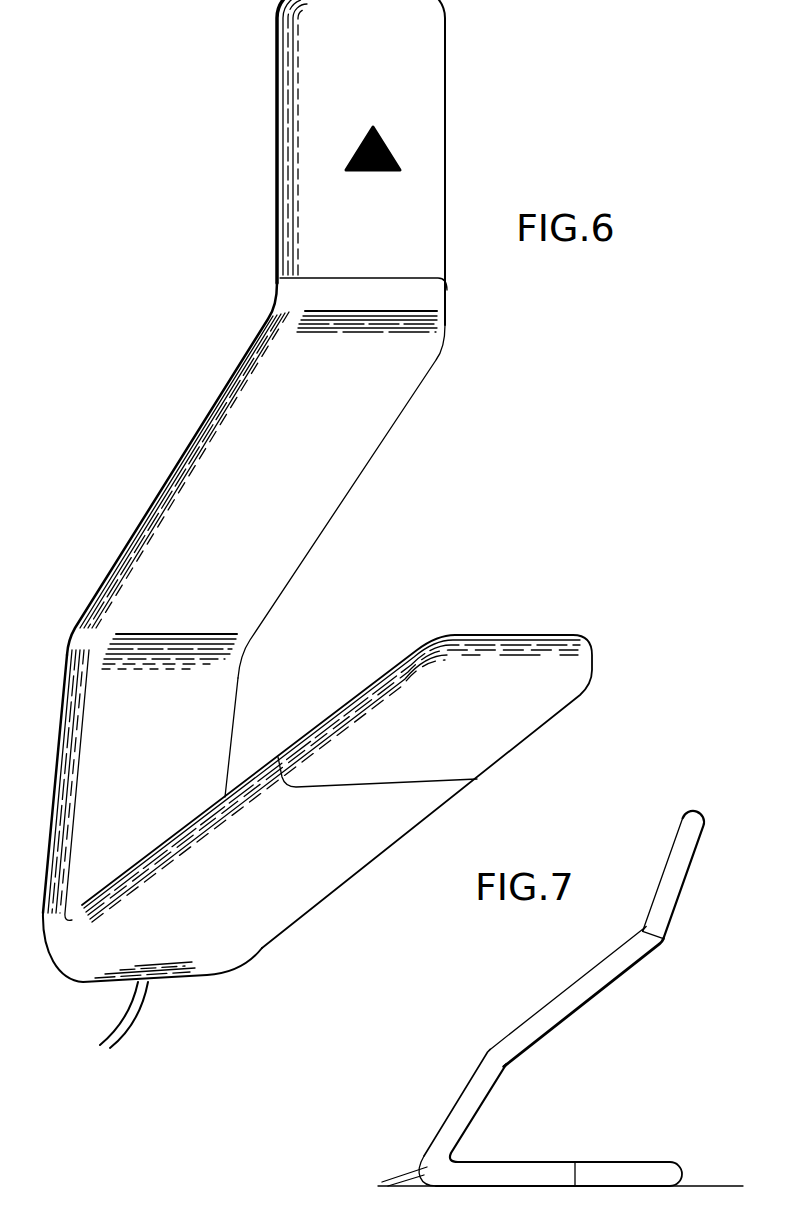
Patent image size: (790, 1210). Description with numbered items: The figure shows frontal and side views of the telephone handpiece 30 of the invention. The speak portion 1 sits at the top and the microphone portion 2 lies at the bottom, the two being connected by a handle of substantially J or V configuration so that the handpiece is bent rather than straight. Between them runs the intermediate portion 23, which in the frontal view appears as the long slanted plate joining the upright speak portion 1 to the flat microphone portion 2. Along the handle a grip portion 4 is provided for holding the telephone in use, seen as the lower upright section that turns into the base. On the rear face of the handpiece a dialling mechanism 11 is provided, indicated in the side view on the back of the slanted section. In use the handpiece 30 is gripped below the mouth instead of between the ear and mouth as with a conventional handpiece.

In FIG. 6, the speak portion 1 is at (414, 44).
In FIG. 7, the speak portion 1 is at (694, 882).
In FIG. 6, the microphone portion 2 is at (528, 628).
In FIG. 7, the microphone portion 2 is at (628, 1158).
In FIG. 6, the grip portion 4 is at (50, 813).
In FIG. 7, the grip portion 4 is at (424, 1109).
In FIG. 7, the dialling mechanism 11 is at (560, 989).
In FIG. 6, the intermediate portion 23 is at (372, 473).
In FIG. 7, the intermediate portion 23 is at (600, 1006).
In FIG. 6, the handpiece 30 is at (176, 408).